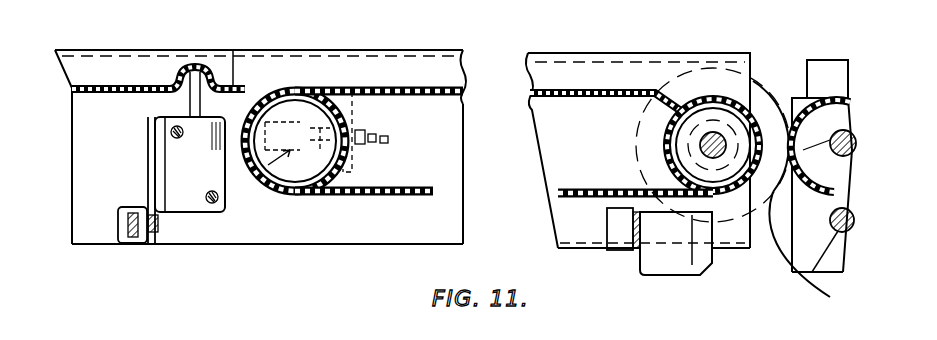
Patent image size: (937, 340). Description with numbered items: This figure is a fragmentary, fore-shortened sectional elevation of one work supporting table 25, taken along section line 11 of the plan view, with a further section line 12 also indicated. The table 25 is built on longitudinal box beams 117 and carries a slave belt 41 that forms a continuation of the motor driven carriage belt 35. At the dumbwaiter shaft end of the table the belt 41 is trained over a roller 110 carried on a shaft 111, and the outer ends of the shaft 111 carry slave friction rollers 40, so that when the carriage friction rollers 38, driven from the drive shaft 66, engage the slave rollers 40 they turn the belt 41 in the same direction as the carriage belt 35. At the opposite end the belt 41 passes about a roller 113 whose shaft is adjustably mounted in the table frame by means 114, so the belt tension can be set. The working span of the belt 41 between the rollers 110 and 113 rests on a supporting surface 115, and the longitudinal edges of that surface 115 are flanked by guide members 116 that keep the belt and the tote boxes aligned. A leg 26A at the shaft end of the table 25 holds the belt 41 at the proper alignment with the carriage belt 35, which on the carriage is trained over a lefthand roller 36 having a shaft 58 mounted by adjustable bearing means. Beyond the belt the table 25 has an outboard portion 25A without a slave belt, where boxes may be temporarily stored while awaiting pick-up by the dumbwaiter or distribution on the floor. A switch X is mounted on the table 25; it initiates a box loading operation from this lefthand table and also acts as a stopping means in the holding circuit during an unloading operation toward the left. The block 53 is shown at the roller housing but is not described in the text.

The section line 11 is at (467, 1).
The section line 12 is at (197, 40).
The switch X is at (205, 66).
The work supporting table 25 is at (350, 247).
The outboard portion 25A is at (72, 183).
The leg 26A is at (658, 277).
The motor driven belt 35 is at (817, 190).
The roller 36 is at (792, 97).
The friction roller 38 is at (783, 253).
The slave friction roller 40 is at (763, 83).
The slave belt 41 is at (530, 80).
The mounting block 53 is at (825, 63).
The shaft 58 is at (857, 100).
The drive shaft 66 is at (815, 283).
The roller 110 is at (648, 132).
The shaft 111 is at (698, 148).
The roller 113 is at (335, 175).
The adjustable mounting means 114 is at (262, 178).
The surface 115 is at (530, 110).
The guide member 116 is at (537, 50).
The longitudinal box beam 117 is at (565, 252).